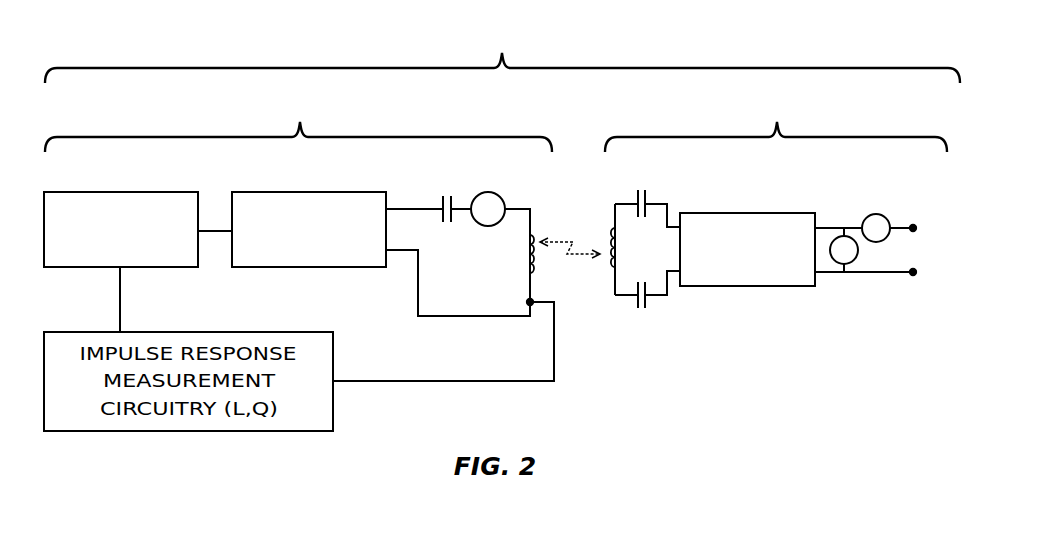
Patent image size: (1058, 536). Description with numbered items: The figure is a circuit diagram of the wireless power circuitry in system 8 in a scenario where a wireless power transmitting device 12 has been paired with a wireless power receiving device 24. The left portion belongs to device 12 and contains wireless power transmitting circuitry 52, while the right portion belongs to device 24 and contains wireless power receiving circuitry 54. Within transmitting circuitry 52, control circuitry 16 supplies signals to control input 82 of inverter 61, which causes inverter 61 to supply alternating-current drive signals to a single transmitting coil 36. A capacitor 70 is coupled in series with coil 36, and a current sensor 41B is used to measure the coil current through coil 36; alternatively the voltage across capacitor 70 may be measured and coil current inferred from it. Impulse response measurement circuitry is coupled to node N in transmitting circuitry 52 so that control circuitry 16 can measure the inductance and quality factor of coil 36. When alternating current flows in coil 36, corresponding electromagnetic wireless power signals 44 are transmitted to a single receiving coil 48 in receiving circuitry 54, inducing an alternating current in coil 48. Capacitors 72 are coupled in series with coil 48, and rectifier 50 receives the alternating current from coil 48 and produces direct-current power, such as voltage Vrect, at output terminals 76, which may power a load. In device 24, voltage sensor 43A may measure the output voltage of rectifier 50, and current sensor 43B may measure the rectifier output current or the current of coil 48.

The wireless power system 8 is at (502, 58).
The wireless power transmitting device 12 is at (298, 126).
The wireless power receiving device 24 is at (776, 126).
The control circuitry 16 is at (72, 268).
The control input 82 is at (222, 232).
The inverter circuitry 61 is at (270, 268).
The wireless power transmitting circuitry 52 is at (387, 315).
The capacitor 70 is at (447, 190).
The current sensor 41B is at (497, 194).
The transmitting coil 36 is at (541, 230).
The wireless power signals 44 is at (573, 245).
The receiving coil 48 is at (603, 273).
The wireless power receiving circuitry 54 is at (731, 298).
The capacitors 72 is at (641, 188).
The rectifier 50 is at (762, 218).
The current sensor 43B is at (880, 214).
The voltage sensor 43A is at (853, 262).
The output terminals 76 is at (915, 232).